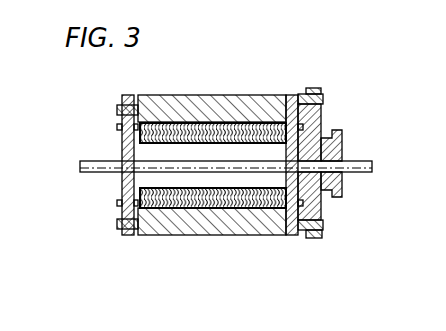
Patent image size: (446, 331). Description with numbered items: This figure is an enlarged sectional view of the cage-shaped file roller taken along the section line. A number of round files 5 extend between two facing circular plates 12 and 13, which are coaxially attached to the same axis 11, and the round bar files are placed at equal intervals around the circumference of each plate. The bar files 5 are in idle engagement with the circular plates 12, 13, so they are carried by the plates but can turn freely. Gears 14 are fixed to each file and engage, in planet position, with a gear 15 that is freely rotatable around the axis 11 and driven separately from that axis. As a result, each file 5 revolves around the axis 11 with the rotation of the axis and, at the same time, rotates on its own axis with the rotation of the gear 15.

The round files 5 is at (212, 128).
The axis 11 is at (361, 159).
The circular plate 12 is at (124, 236).
The circular plate 13 is at (293, 236).
The gears 14 is at (321, 92).
The gear 15 is at (342, 183).